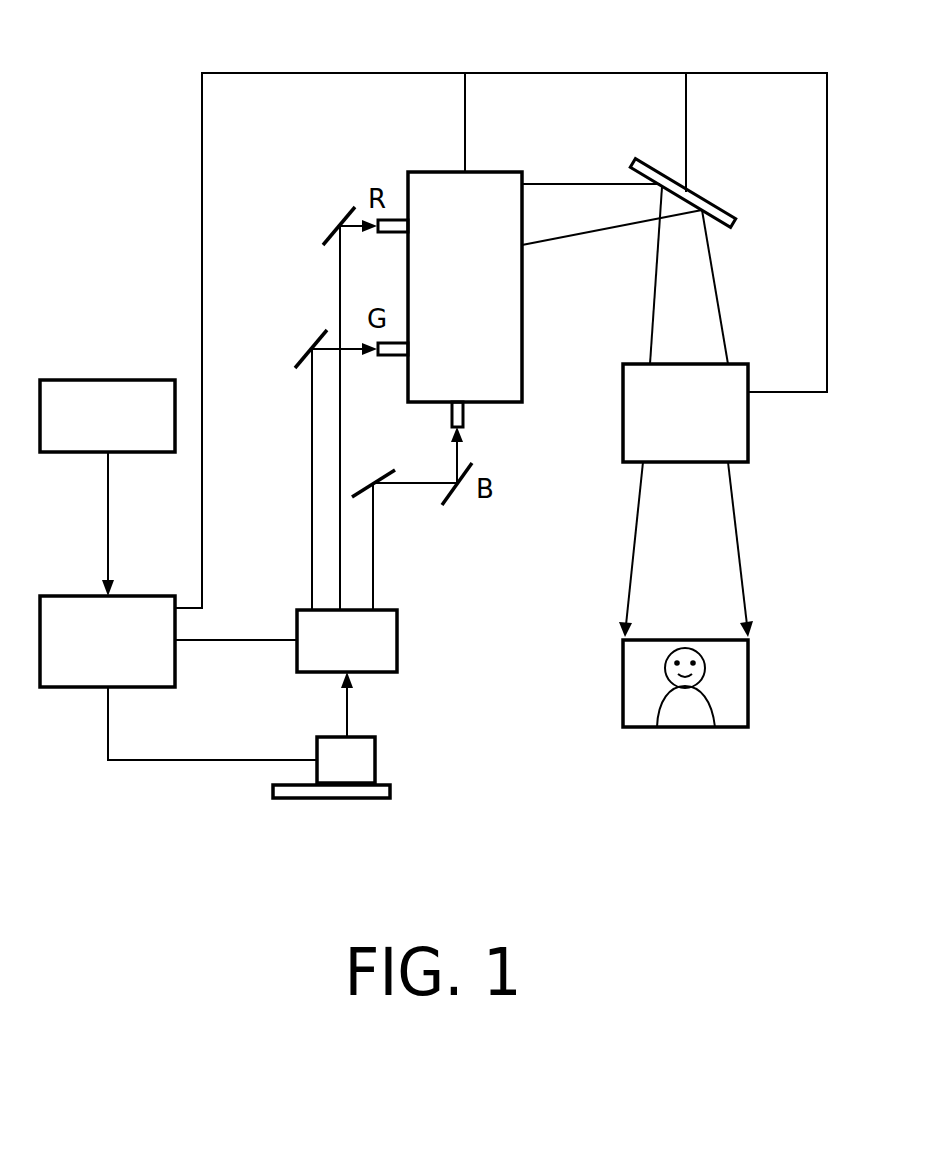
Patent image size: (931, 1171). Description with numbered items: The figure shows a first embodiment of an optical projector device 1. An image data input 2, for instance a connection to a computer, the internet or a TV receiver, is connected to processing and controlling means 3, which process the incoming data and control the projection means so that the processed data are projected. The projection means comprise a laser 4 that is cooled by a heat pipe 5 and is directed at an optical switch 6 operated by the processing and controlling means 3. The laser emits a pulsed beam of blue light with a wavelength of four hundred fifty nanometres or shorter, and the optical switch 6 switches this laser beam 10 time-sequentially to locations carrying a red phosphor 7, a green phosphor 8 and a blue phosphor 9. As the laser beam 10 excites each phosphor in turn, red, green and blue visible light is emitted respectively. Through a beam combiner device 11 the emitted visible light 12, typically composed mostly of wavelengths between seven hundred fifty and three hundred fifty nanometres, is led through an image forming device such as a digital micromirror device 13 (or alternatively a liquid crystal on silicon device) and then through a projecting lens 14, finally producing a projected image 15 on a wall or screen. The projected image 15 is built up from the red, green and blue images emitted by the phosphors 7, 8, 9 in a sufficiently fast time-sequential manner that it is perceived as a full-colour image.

The optical projector device 1 is at (100, 80).
The image data input 2 is at (107, 416).
The processing and controlling means 3 is at (107, 641).
The laser 4 is at (375, 753).
The heat pipe 5 is at (302, 800).
The optical switch 6 is at (347, 641).
The red phosphor 7 is at (390, 233).
The green phosphor 8 is at (392, 356).
The blue phosphor 9 is at (466, 412).
The laser beam 10 is at (340, 548).
The beam combiner device 11 is at (465, 287).
The emitted visible light 12 is at (578, 182).
The digital micromirror device 13 is at (722, 205).
The projecting lens 14 is at (685, 413).
The projected image 15 is at (750, 688).